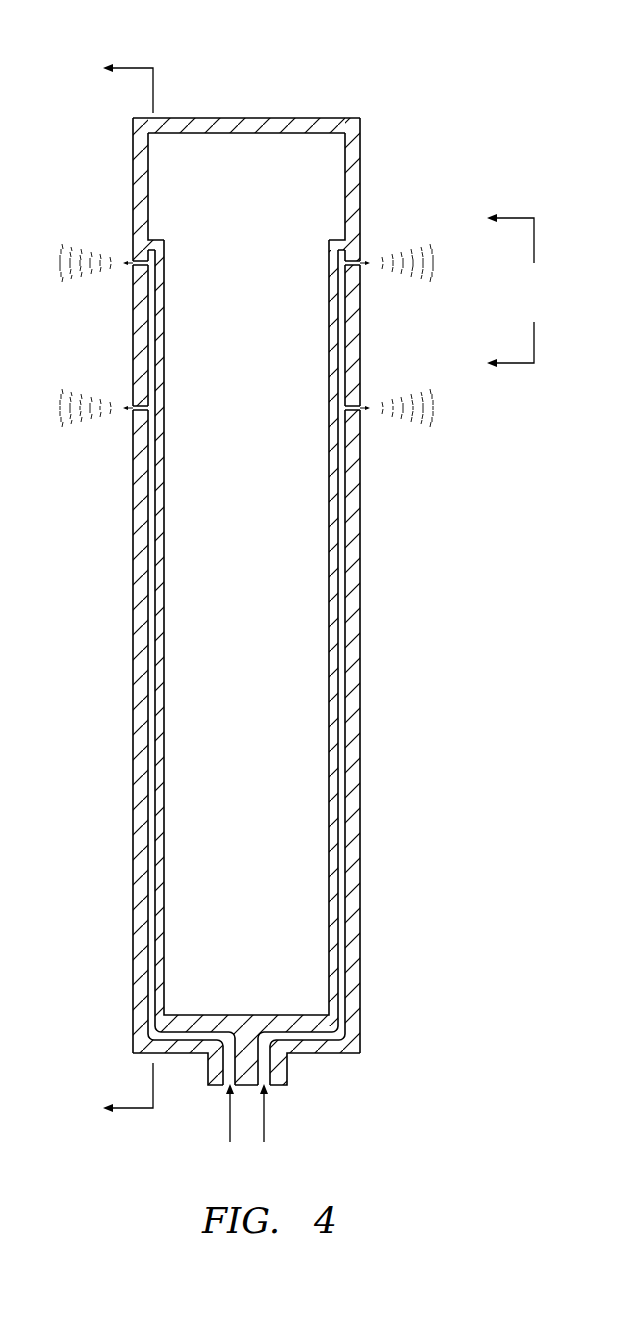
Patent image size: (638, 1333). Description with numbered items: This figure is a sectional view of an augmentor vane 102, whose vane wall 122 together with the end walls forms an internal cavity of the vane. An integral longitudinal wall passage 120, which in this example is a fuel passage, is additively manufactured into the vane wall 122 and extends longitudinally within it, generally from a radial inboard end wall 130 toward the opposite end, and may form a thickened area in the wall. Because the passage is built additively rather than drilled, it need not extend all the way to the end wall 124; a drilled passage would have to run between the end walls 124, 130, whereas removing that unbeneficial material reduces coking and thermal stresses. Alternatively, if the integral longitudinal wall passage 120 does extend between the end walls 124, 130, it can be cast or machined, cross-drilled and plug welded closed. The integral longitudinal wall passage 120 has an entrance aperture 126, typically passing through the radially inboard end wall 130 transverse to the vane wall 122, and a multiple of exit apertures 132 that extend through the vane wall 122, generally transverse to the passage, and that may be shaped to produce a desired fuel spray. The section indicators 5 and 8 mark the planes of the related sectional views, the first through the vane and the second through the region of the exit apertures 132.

The augmentor vane 102 is at (283, 582).
The integral longitudinal wall passage 120 is at (343, 726).
The vane wall 122 is at (362, 662).
The end wall 124 is at (255, 117).
The entrance aperture 126 is at (265, 1087).
The radial inboard end wall 130 is at (320, 1055).
The exit apertures 132 is at (395, 282).
The section line 5- 5 is at (120, 588).
The section line 8- 8 is at (501, 291).